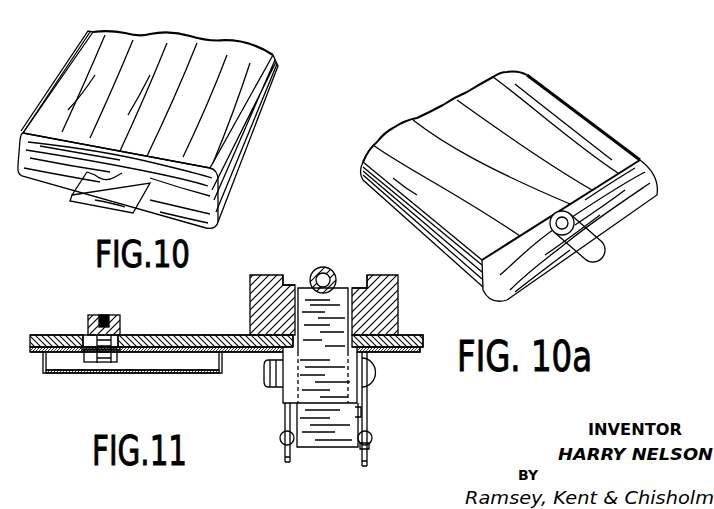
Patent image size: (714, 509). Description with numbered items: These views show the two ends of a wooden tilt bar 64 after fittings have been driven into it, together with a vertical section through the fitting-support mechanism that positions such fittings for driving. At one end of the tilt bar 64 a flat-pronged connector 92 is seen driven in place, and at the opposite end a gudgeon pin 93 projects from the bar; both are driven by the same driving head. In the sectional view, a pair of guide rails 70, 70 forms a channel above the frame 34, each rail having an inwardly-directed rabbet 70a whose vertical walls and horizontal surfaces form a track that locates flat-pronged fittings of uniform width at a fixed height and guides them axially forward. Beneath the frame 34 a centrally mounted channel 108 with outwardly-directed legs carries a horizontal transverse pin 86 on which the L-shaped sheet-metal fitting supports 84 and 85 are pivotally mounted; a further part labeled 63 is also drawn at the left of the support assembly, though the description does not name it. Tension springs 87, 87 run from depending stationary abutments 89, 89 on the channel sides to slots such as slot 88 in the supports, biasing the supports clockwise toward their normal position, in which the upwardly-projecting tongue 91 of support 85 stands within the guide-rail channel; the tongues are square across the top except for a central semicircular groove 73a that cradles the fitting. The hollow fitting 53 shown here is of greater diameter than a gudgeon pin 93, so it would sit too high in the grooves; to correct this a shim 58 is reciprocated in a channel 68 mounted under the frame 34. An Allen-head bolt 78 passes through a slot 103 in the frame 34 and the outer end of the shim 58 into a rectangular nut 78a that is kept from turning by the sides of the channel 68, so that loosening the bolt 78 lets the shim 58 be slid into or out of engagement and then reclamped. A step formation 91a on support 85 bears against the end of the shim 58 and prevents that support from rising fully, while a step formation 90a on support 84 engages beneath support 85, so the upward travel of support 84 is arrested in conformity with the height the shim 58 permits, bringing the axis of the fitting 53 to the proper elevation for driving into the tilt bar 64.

In FIG. 10, the tilt bar 64 is at (210, 62).
In FIG. 10A, the tilt bar 64 is at (567, 132).
In FIG. 10, the connector 92 is at (83, 193).
In FIG. 10A, the gudgeon pin 93 is at (597, 240).
In FIG. 11, the frame 34 is at (187, 313).
In FIG. 11, the tongue 91 is at (348, 326).
In FIG. 11, the shim 58 is at (242, 353).
In FIG. 11, the channel 68 is at (153, 370).
In FIG. 11, the slot 103 is at (87, 338).
In FIG. 11, the bolt 78 is at (110, 318).
In FIG. 11, the nut 78a is at (95, 363).
In FIG. 11, the guide rail 70 is at (260, 293).
In FIG. 11, the rabbet 70a is at (288, 283).
In FIG. 11, the fitting 53 is at (333, 268).
In FIG. 11, the semicircular groove 73a is at (313, 302).
In FIG. 11, the step formation 91a is at (297, 362).
In FIG. 11, the fitting support 85 is at (340, 416).
In FIG. 11, the fitting support 84 is at (317, 454).
In FIG. 11, the channel 108 is at (285, 417).
In FIG. 11, the nut 63 is at (263, 363).
In FIG. 11, the pin 86 is at (378, 375).
In FIG. 11, the step formation 90a is at (360, 413).
In FIG. 11, the tension spring 87 is at (278, 437).
In FIG. 11, the slot 88 is at (370, 443).
In FIG. 11, the abutment 89 is at (287, 455).